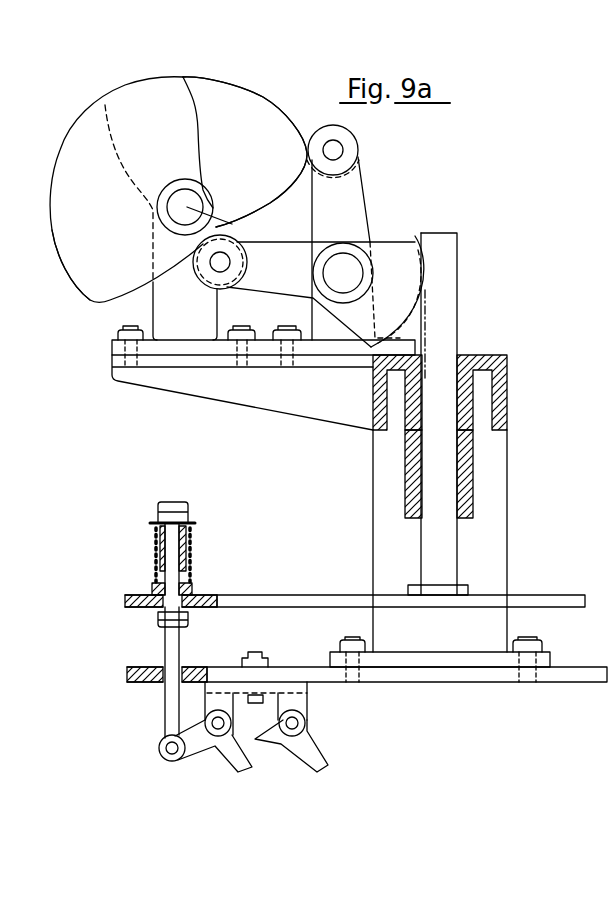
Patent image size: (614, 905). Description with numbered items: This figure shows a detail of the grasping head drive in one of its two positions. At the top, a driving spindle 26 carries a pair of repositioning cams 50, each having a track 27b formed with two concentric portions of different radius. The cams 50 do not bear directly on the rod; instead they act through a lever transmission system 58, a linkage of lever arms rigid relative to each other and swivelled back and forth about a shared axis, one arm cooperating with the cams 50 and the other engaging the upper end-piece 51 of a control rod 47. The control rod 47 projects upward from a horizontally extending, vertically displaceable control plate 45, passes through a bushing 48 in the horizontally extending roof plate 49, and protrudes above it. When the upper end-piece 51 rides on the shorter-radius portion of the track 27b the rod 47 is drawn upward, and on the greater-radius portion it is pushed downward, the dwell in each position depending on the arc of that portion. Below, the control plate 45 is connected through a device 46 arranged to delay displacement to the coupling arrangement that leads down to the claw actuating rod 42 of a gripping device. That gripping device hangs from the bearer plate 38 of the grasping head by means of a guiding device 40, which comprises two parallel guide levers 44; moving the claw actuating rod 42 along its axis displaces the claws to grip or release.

The repositioning cam 50 is at (78, 150).
The track 27b is at (68, 277).
The driving spindle 26 is at (232, 224).
The lever transmission system 58 is at (373, 228).
The upper end-piece 51 is at (461, 259).
The roof plate 49 is at (335, 360).
The bushing 48 is at (463, 455).
The control rod 47 is at (443, 565).
The control plate 45 is at (253, 603).
The device arranged to delay displacement 46 is at (195, 577).
The claw actuating rod 42 is at (173, 645).
The bearer plate 38 is at (555, 673).
The guide lever 44 is at (327, 757).
The guiding device 40 is at (328, 763).